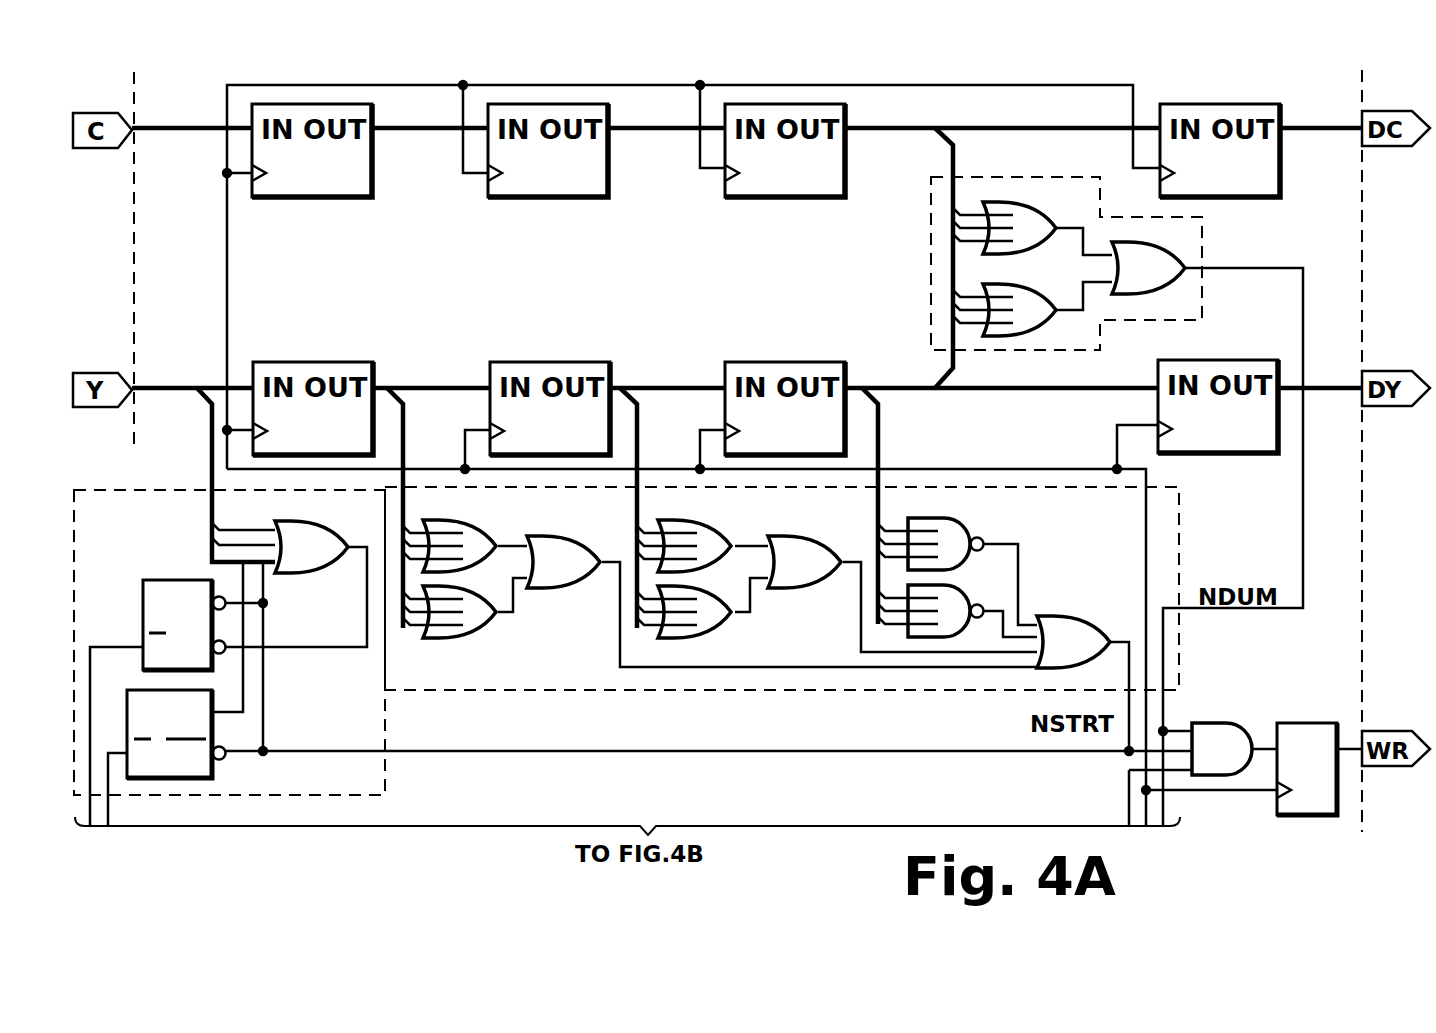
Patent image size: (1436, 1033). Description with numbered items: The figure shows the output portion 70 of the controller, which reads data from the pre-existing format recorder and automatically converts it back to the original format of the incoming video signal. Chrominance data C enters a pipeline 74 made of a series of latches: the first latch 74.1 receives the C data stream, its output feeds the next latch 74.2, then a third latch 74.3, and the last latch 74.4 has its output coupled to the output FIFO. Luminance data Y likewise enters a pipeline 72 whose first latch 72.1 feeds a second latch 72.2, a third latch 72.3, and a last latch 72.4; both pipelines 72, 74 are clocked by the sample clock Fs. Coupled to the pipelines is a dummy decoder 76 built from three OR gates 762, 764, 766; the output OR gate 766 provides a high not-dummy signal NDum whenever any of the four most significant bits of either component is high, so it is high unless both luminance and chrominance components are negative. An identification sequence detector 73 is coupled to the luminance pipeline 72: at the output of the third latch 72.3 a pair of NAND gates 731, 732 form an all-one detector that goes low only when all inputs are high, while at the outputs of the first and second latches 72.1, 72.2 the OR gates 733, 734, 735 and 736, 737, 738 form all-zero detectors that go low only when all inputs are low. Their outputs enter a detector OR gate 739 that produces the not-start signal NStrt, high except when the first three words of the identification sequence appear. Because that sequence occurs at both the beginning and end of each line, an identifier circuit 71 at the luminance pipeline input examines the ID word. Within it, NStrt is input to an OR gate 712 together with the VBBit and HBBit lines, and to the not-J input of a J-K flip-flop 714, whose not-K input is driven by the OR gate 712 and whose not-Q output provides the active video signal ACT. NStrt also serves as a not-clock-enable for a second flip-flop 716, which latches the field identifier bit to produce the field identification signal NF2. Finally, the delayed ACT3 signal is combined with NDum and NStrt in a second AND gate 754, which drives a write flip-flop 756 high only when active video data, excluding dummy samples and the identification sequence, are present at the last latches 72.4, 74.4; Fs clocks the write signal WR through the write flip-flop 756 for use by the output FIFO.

The output portion 70 is at (651, 299).
The chrominance pipeline 74 is at (447, 219).
The first latch 74.1 is at (335, 199).
The second latch 74.2 is at (530, 199).
The third latch 74.3 is at (757, 199).
The last latch 74.4 is at (1245, 104).
The luminance pipeline 72 is at (456, 301).
The first latch 72.1 is at (335, 361).
The second latch 72.2 is at (565, 361).
The third latch 72.3 is at (800, 361).
The last latch 72.4 is at (1178, 359).
The dummy decoder 76 is at (930, 222).
The OR gate 762 is at (1042, 205).
The OR gate 764 is at (995, 283).
The OR gate 766 is at (1185, 256).
The identification sequence detector 73 is at (1179, 566).
The NAND gate 731 is at (950, 519).
The NAND gate 732 is at (965, 594).
The OR gate 733 is at (700, 521).
The OR gate 734 is at (690, 640).
The OR gate 735 is at (830, 589).
The OR gate 736 is at (484, 535).
The OR gate 737 is at (488, 617).
The OR gate 738 is at (582, 590).
The detector OR gate 739 is at (1108, 606).
The identifier circuit 71 is at (385, 801).
The OR gate 712 is at (330, 573).
The J-K flip-flop 714 is at (188, 580).
The second flip-flop 716 is at (212, 693).
The second AND gate 754 is at (1248, 723).
The write flip-flop 756 is at (1310, 723).